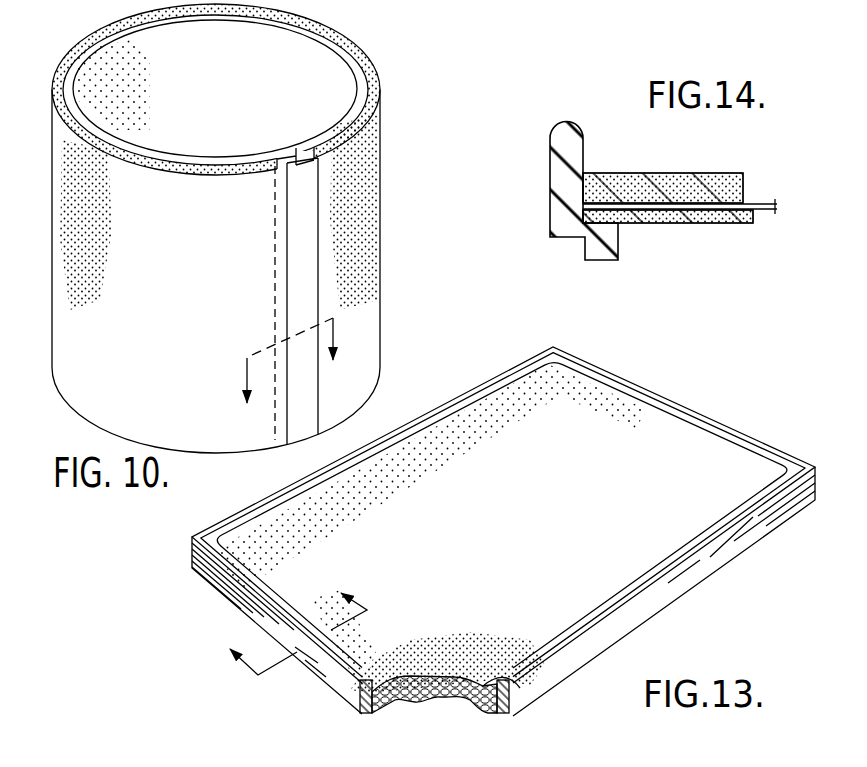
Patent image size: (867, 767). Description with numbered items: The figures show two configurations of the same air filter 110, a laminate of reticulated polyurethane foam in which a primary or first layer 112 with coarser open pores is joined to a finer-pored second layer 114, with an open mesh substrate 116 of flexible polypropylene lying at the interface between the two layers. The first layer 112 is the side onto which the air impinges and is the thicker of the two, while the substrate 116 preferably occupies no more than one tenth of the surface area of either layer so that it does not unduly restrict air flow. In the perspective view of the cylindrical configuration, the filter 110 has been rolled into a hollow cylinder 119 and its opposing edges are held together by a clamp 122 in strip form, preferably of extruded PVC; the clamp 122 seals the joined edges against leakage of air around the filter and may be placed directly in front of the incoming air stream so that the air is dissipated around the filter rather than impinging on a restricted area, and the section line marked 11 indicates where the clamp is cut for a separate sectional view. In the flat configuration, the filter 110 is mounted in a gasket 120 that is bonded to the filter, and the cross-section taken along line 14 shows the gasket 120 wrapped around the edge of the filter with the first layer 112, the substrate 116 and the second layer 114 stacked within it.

In FIG. 13, the air filter 110 is at (634, 436).
In FIG. 10, the first layer 112 is at (368, 80).
In FIG. 13, the first layer 112 is at (527, 688).
In FIG. 10, the second layer 114 is at (352, 60).
In FIG. 13, the second layer 114 is at (457, 702).
In FIG. 13, the open mesh substrate 116 is at (420, 698).
In FIG. 10, the hollow cylinder 119 is at (384, 236).
In FIG. 14, the gasket 120 is at (586, 157).
In FIG. 13, the gasket 120 is at (643, 627).
In FIG. 10, the clamp 122 is at (323, 381).
In FIG. 10, the section line 11- 11 is at (289, 363).
In FIG. 13, the section line 14- 14 is at (290, 622).